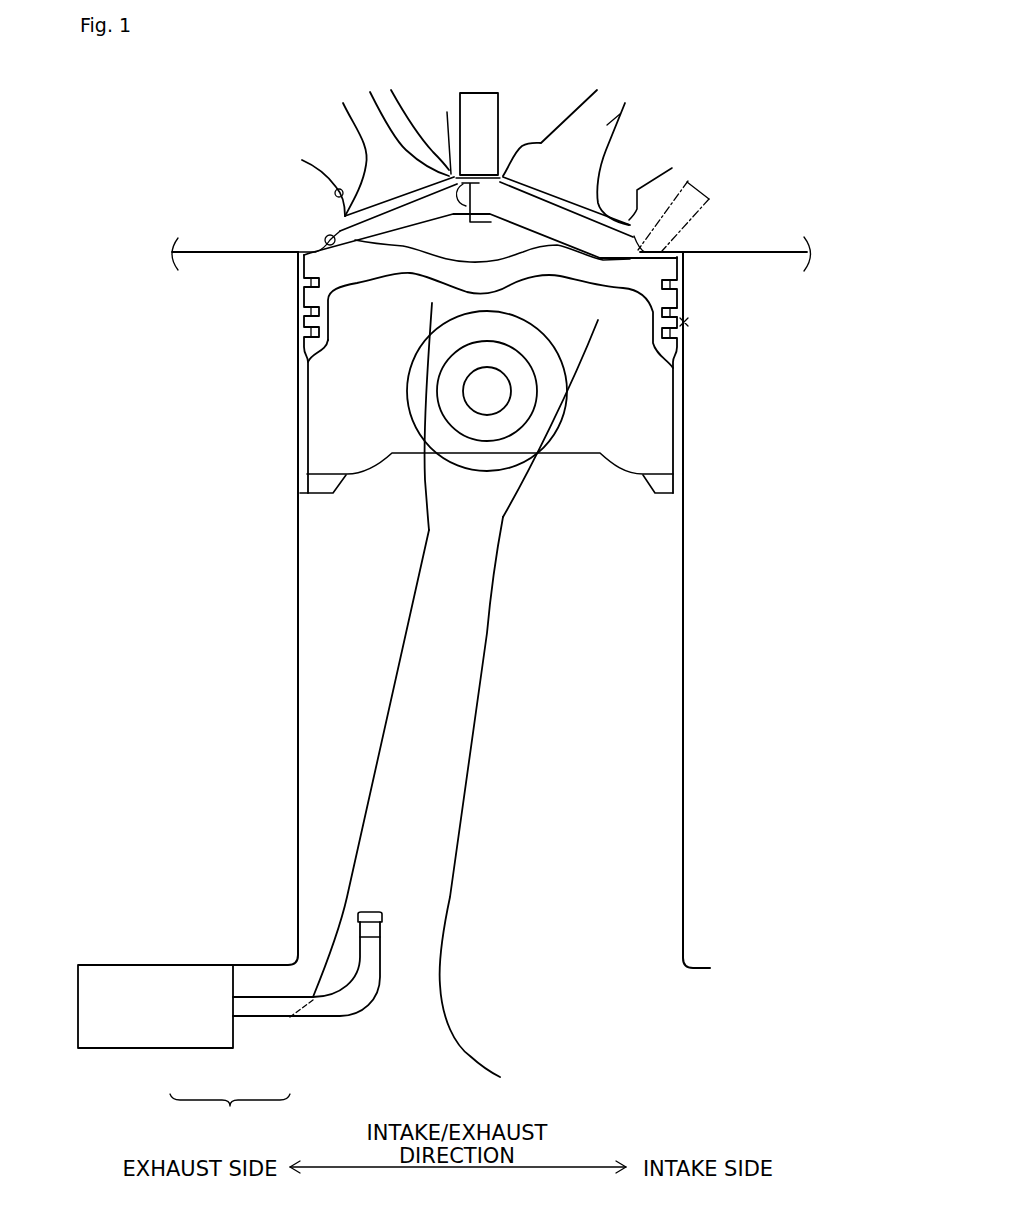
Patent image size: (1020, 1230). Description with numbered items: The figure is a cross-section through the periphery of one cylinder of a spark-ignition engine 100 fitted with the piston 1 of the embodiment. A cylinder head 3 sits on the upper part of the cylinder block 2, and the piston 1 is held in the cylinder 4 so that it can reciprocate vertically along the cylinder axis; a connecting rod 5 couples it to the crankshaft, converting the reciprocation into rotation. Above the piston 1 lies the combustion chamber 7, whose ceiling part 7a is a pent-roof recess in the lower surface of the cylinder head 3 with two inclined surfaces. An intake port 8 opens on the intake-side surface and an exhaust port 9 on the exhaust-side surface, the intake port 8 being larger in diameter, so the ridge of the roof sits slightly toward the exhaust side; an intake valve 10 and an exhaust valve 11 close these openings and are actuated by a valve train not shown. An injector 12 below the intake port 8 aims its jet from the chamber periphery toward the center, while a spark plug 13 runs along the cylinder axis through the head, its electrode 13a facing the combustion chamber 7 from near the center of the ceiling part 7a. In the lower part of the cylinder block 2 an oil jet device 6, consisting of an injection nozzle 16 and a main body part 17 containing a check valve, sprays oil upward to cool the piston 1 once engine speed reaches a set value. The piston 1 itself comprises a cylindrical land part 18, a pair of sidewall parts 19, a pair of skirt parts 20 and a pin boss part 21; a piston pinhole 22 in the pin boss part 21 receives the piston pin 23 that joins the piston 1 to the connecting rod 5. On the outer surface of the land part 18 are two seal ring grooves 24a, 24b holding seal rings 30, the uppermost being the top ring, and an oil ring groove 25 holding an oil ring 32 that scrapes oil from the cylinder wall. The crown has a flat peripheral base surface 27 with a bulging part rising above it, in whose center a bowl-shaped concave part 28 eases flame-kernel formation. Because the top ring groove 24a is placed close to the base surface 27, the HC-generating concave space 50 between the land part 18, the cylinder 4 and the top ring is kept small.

The engine 100 is at (205, 118).
The piston 1 is at (365, 532).
The cylinder block 2 is at (752, 256).
The cylinder head 3 is at (786, 252).
The cylinder 4 is at (686, 578).
The connecting rod 5 is at (472, 627).
The oil jet device 6 is at (230, 1114).
The combustion chamber 7 is at (476, 202).
The ceiling part 7a is at (325, 240).
The intake port 8 is at (630, 216).
The exhaust port 9 is at (334, 199).
The intake valve 10 is at (616, 122).
The exhaust valve 11 is at (346, 121).
The injector 12 is at (688, 181).
The spark plug 13 is at (477, 102).
The electrode 13a is at (447, 112).
The injection nozzle 16 is at (297, 1013).
The main body part 17 is at (184, 1040).
The land part 18 is at (686, 322).
The sidewall part 19 is at (656, 458).
The skirt part 20 is at (686, 412).
The pin boss part 21 is at (548, 410).
The piston pinhole 22 is at (497, 440).
The piston pin 23 is at (523, 383).
The top ring groove 24a is at (305, 283).
The seal ring groove 24b is at (305, 312).
The oil ring groove 25 is at (305, 334).
The base surface 27 is at (664, 253).
The concave part 28 is at (512, 254).
The seal ring 30 is at (684, 320).
The oil ring 32 is at (684, 325).
The concave part 50 is at (300, 260).